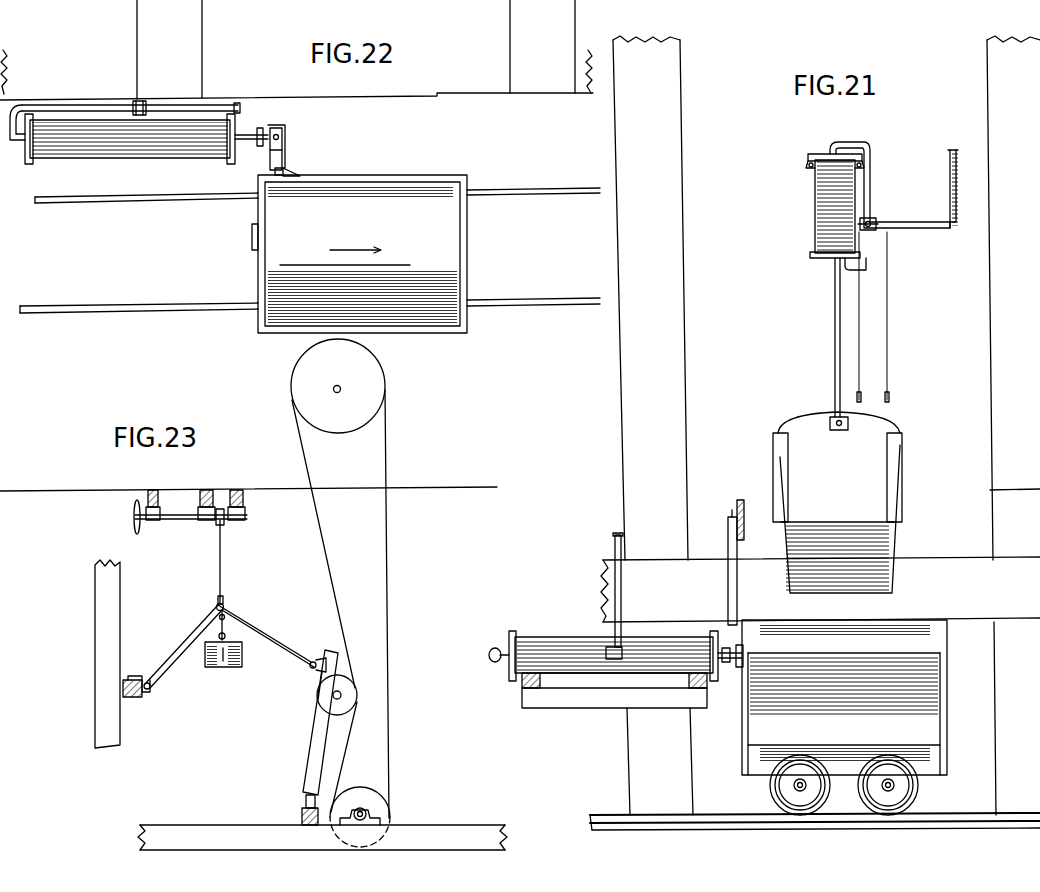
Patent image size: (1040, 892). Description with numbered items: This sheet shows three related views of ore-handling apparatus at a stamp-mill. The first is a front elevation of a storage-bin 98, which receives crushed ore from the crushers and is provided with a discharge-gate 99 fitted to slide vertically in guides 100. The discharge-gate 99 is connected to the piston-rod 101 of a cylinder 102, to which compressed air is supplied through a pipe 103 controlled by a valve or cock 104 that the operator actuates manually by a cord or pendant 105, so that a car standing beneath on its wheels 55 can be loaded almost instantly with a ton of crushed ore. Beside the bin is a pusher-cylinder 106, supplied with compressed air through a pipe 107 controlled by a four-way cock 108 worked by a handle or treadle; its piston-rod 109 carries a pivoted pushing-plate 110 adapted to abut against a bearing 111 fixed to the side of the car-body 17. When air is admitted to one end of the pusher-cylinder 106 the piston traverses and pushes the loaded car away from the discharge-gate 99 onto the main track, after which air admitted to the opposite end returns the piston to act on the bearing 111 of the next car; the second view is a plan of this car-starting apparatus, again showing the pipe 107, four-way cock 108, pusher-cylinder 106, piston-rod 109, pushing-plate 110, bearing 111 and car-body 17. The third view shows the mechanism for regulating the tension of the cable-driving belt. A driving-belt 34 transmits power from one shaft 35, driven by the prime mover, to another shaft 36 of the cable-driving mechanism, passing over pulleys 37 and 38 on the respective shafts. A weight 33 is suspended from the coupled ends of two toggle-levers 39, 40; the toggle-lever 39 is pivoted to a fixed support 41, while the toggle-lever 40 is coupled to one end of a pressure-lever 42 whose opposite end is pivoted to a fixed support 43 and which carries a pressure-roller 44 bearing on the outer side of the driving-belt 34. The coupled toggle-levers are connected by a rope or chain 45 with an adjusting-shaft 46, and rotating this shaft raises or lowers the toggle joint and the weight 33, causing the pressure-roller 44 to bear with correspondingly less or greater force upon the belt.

In FIG. 22, the car-body 17 is at (359, 254).
In FIG. 21, the car-body 17 is at (844, 697).
In FIG. 23, the weight 33 is at (222, 667).
In FIG. 23, the driving-belt 34 is at (376, 604).
In FIG. 23, the shaft 35 is at (368, 812).
In FIG. 23, the shaft 36 is at (338, 386).
In FIG. 23, the pulley 37 is at (356, 790).
In FIG. 23, the pulley 38 is at (323, 432).
In FIG. 23, the toggle-lever 39 is at (183, 647).
In FIG. 23, the toggle-lever 40 is at (272, 638).
In FIG. 23, the fixed support 41 is at (139, 696).
In FIG. 23, the pressure-lever 42 is at (303, 722).
In FIG. 23, the fixed support 43 is at (290, 809).
In FIG. 23, the pressure-roller 44 is at (348, 685).
In FIG. 23, the rope or chain 45 is at (236, 562).
In FIG. 23, the adjusting-shaft 46 is at (168, 522).
In FIG. 21, the wheels 55 is at (840, 785).
In FIG. 22, the storage-bin 98 is at (442, 79).
In FIG. 21, the discharge-gate 99 is at (839, 502).
In FIG. 21, the guides 100 is at (835, 477).
In FIG. 21, the piston-rod 101 is at (834, 344).
In FIG. 21, the cylinder 102 is at (816, 210).
In FIG. 21, the pipe 103 is at (952, 210).
In FIG. 21, the valve or cock 104 is at (878, 232).
In FIG. 21, the cord or pendant 105 is at (888, 350).
In FIG. 22, the pusher-cylinder 106 is at (100, 153).
In FIG. 21, the pusher-cylinder 106 is at (560, 640).
In FIG. 22, the pipe 107 is at (73, 105).
In FIG. 21, the pipe 107 is at (614, 555).
In FIG. 22, the four-way cock 108 is at (141, 101).
In FIG. 22, the piston-rod 109 is at (246, 145).
In FIG. 21, the piston-rod 109 is at (735, 672).
In FIG. 22, the pushing-plate 110 is at (284, 152).
In FIG. 22, the bearing 111 is at (298, 174).